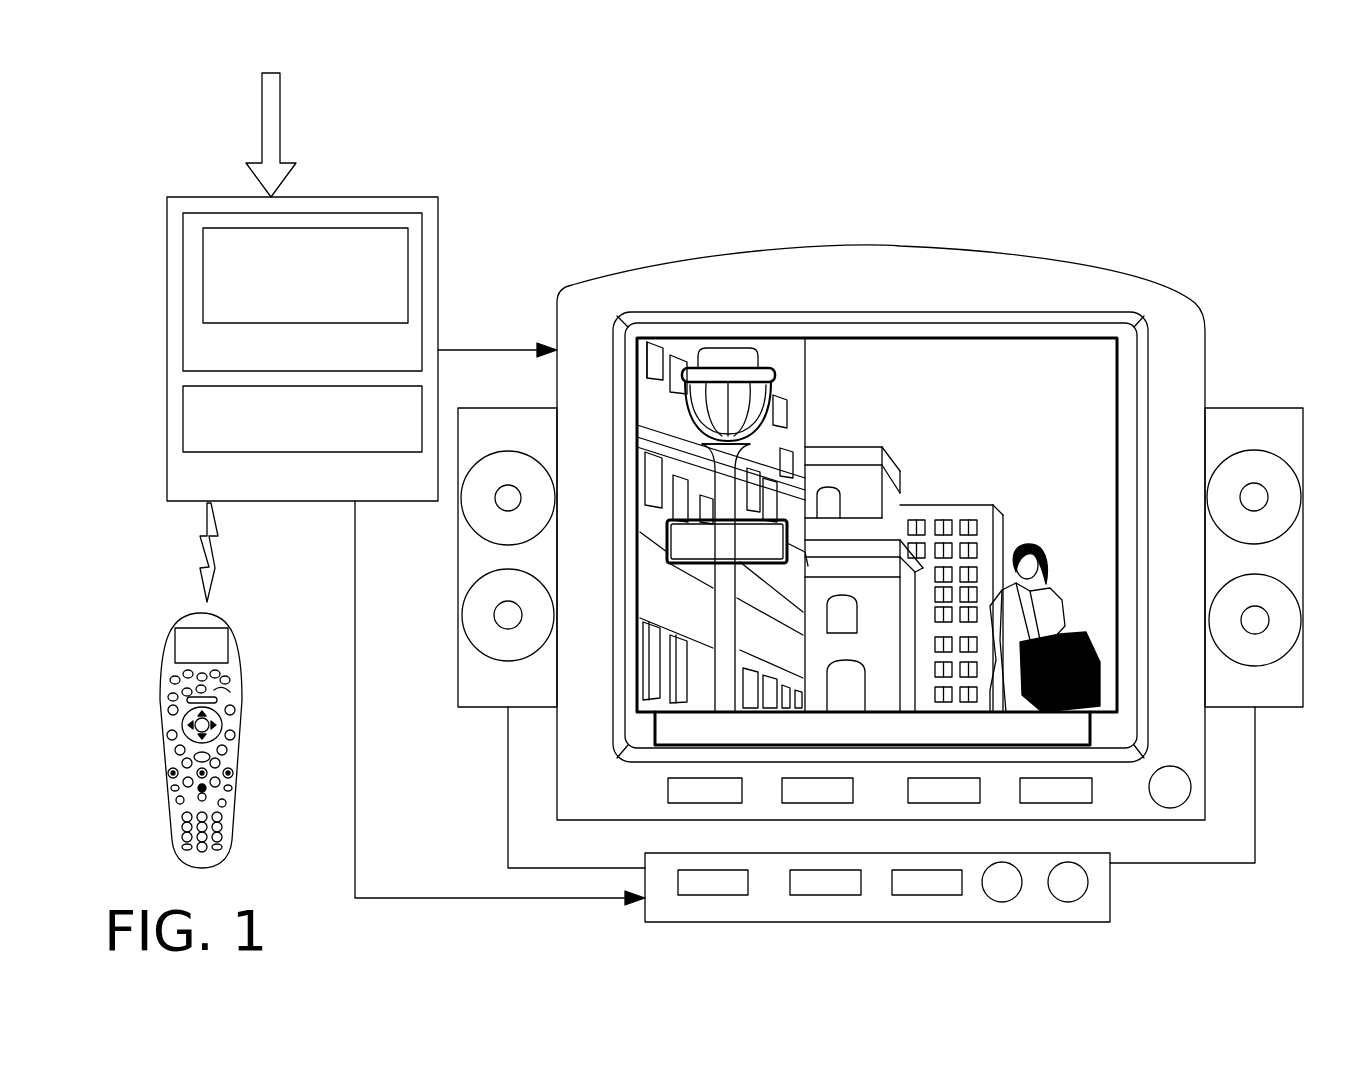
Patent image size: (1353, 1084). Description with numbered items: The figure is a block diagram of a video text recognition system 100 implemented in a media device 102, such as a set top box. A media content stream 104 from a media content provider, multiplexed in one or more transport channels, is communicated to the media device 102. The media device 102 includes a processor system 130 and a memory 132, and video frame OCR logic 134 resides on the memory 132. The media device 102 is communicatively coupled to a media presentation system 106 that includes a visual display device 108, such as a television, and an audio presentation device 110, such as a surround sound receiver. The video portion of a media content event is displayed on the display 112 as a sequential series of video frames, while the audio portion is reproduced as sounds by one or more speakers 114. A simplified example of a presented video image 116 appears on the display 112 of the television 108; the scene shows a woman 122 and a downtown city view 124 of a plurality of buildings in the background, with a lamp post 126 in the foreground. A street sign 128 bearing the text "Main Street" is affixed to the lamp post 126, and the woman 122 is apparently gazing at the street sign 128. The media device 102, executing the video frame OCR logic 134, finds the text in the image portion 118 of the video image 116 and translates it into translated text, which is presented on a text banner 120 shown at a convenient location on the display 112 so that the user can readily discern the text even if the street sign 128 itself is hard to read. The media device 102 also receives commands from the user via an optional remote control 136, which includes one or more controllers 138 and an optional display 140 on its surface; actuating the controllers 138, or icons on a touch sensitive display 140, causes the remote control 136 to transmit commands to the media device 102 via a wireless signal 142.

The video text recognition system 100 is at (174, 160).
The media device 102 is at (386, 491).
The media content stream 104 is at (240, 87).
The media presentation system 106 is at (1212, 222).
The visual display device 108 is at (900, 247).
The audio presentation device 110 is at (1110, 890).
The display 112 is at (1122, 540).
The speakers 114 is at (1257, 408).
The video image 116 is at (969, 365).
The image portion 118 is at (776, 530).
The text banner 120 is at (1063, 726).
The woman 122 is at (1033, 522).
The downtown city view 124 is at (987, 426).
The lamp post 126 is at (745, 628).
The street sign 128 is at (680, 538).
The processor system 130 is at (369, 440).
The memory 132 is at (369, 360).
The video frame OCR logic 134 is at (360, 317).
The remote control 136 is at (190, 740).
The controllers 138 is at (163, 757).
The display 140 is at (183, 657).
The wireless signal 142 is at (184, 565).